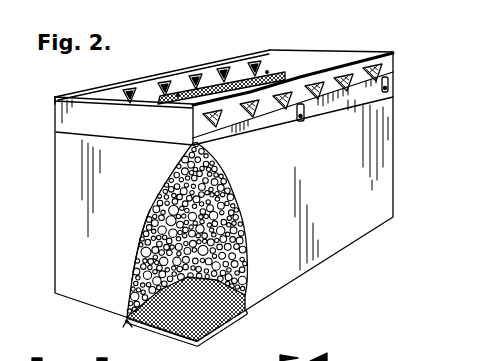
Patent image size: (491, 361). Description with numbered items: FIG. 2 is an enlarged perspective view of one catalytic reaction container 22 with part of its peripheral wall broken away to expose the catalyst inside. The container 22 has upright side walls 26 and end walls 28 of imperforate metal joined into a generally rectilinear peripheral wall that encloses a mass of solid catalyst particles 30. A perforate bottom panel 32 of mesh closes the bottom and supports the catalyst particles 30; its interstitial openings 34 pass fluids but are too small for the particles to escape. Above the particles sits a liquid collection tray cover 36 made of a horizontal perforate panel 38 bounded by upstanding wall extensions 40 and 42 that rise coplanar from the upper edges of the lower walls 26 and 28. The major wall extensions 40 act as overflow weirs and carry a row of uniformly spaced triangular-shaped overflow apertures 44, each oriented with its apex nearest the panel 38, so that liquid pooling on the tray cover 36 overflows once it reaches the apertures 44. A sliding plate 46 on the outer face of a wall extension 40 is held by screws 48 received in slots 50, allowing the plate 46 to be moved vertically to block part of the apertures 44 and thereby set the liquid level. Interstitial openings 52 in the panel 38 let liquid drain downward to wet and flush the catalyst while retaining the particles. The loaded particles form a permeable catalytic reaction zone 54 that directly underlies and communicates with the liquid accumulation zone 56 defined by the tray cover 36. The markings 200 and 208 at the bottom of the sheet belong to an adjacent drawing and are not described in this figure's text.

The container 22 is at (206, 46).
The side wall 26 is at (269, 279).
The end wall 28 is at (75, 287).
The solid catalyst particles 30 is at (231, 190).
The perforate bottom panel 32 is at (222, 330).
The interstitial openings 34 is at (127, 323).
The liquid collection tray cover 36 is at (307, 42).
The perforate panel 38 is at (207, 99).
The major wall extension 40 is at (378, 50).
The wall extension 42 is at (273, 61).
The triangular-shaped overflow apertures 44 is at (169, 81).
The sliding plate 46 is at (348, 102).
The screws 48 is at (393, 80).
The slots 50 is at (388, 91).
The interstitial openings 52 is at (166, 103).
The catalytic reaction zone 54 is at (150, 238).
The liquid accumulation zone 56 is at (99, 91).
The tool 200 is at (334, 357).
The tool part 208 is at (355, 355).